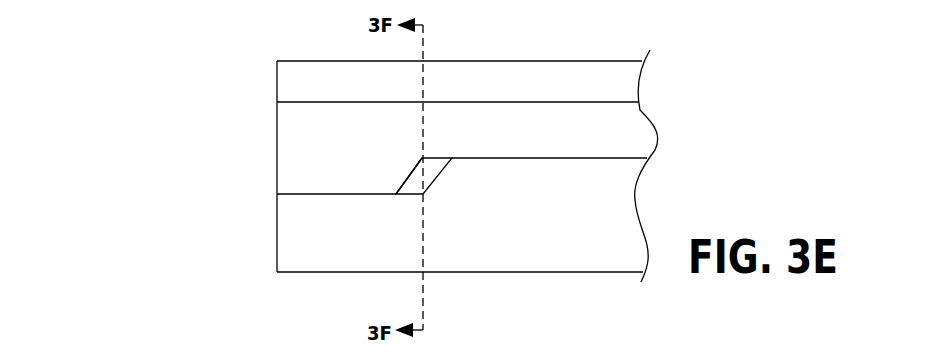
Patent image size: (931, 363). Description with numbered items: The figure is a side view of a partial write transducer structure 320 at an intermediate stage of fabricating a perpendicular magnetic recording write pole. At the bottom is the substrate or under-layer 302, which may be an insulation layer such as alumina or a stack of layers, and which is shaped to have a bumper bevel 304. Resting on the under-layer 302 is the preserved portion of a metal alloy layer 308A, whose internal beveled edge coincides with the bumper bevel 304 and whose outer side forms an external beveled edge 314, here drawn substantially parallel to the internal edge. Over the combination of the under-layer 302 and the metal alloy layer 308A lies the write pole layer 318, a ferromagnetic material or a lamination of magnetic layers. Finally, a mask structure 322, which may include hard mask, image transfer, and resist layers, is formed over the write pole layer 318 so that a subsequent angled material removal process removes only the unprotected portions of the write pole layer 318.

The under-layer 302 is at (293, 218).
The bumper bevel 304 is at (443, 170).
The metal alloy layer 308A is at (388, 182).
The external beveled edge 314 is at (408, 178).
The write pole layer 318 is at (292, 121).
The partial write transducer structure 320 is at (121, 162).
The mask structure 322 is at (288, 77).